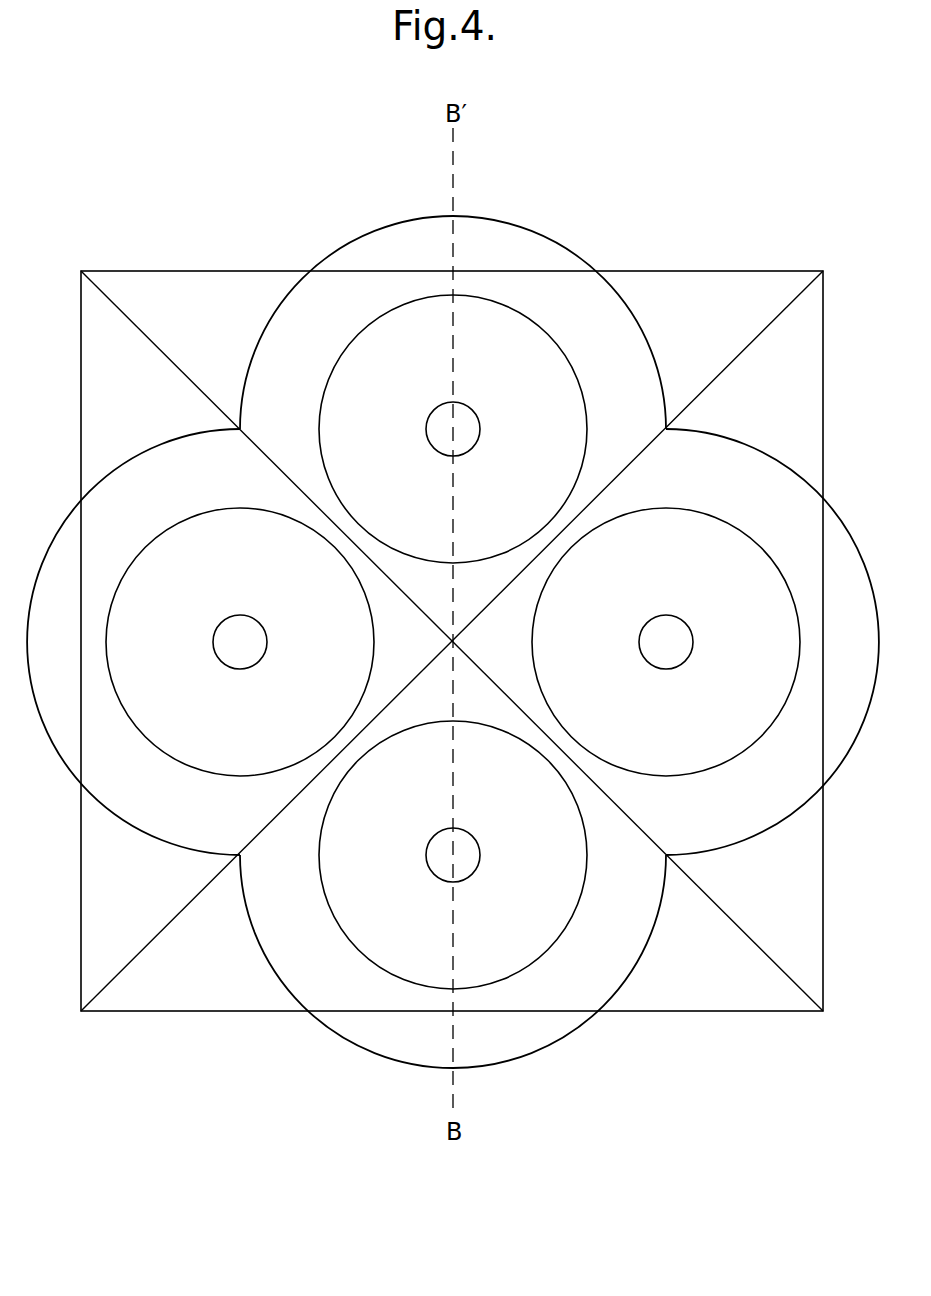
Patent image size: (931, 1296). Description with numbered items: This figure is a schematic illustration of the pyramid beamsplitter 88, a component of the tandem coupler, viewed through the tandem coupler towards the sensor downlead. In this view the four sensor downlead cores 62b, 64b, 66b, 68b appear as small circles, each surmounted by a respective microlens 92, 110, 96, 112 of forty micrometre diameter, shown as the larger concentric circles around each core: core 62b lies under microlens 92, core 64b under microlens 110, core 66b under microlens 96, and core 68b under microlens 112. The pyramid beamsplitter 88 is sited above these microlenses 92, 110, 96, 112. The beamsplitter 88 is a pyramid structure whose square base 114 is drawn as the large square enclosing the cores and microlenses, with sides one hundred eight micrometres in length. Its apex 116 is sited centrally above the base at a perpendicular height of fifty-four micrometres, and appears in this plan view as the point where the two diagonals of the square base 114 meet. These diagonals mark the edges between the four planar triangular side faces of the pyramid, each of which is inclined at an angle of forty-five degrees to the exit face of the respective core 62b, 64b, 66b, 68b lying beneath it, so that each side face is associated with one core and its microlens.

The square base 114 is at (175, 270).
The pyramid beamsplitter 88 is at (101, 397).
The apex 116 is at (455, 641).
The microlens 92 is at (572, 390).
The sensor downlead core 62b is at (466, 417).
The microlens 110 is at (692, 526).
The sensor downlead core 64b is at (682, 637).
The microlens 112 is at (190, 750).
The sensor downlead core 68b is at (250, 630).
The microlens 96 is at (352, 906).
The sensor downlead core 66b is at (440, 866).